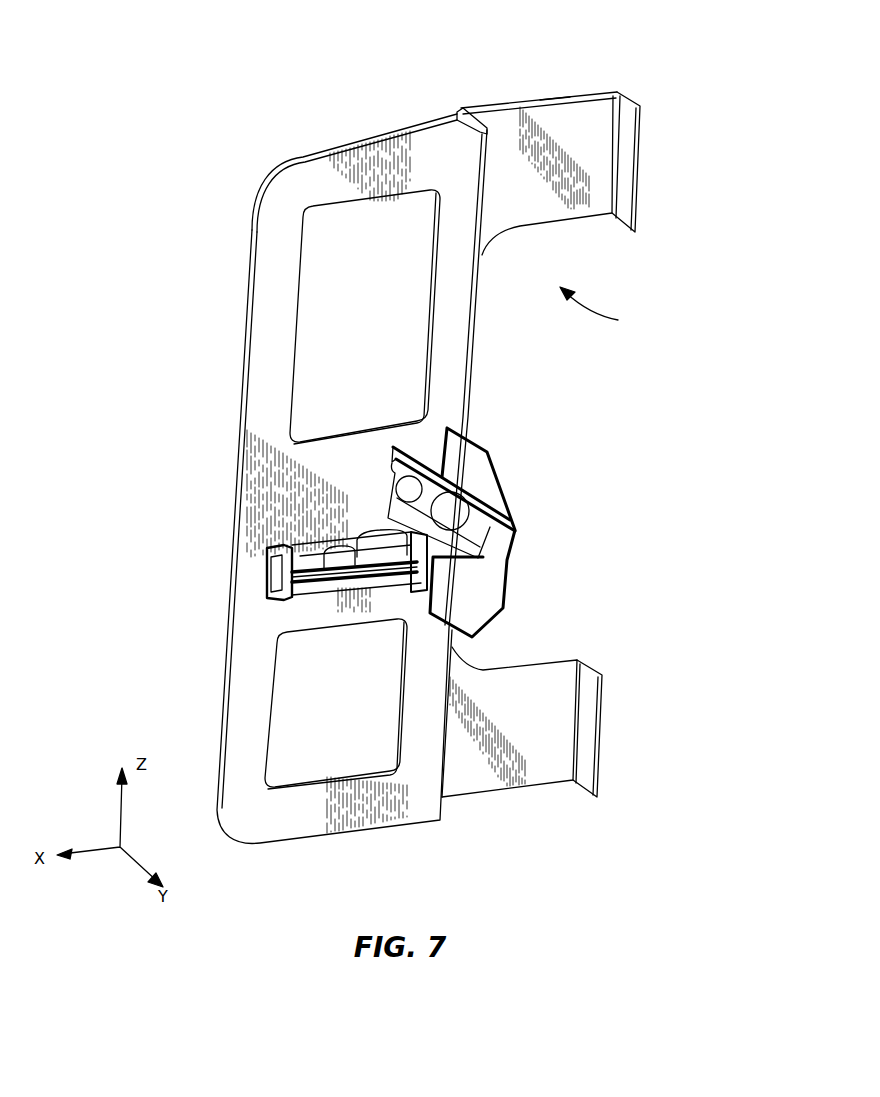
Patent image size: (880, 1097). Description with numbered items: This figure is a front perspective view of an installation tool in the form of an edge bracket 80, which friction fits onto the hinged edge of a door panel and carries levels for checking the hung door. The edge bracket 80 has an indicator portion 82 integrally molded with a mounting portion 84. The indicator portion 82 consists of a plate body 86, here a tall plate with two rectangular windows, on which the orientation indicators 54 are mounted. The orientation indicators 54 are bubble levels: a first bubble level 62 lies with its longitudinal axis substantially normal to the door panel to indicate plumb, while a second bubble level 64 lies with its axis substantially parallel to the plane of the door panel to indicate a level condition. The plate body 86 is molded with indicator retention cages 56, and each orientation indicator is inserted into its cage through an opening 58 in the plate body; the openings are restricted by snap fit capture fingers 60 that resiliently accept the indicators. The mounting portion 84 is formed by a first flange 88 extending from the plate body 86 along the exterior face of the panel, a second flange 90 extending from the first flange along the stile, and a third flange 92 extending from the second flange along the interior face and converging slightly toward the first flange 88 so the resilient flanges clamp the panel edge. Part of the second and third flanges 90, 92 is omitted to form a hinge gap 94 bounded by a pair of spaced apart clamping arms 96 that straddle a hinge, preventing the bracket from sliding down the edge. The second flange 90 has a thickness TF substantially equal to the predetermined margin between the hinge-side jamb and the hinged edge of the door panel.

The edge bracket 80 is at (227, 118).
The indicator portion 82 is at (253, 533).
The mounting portion 84 is at (587, 93).
The plate body 86 is at (253, 623).
The first flange 88 is at (472, 110).
The second flange 90 is at (513, 130).
The third flange 92 is at (625, 170).
The hinge gap 94 is at (603, 309).
The clamping arms 96 is at (588, 152).
The thickness of the second flange TF is at (555, 95).
The orientation indicator 54 is at (267, 560).
The indicator retention cage 56 is at (267, 600).
The opening 58 is at (291, 537).
The snap fit capture finger 60 is at (307, 562).
The first bubble level 62 is at (377, 557).
The second bubble level 64 is at (480, 467).